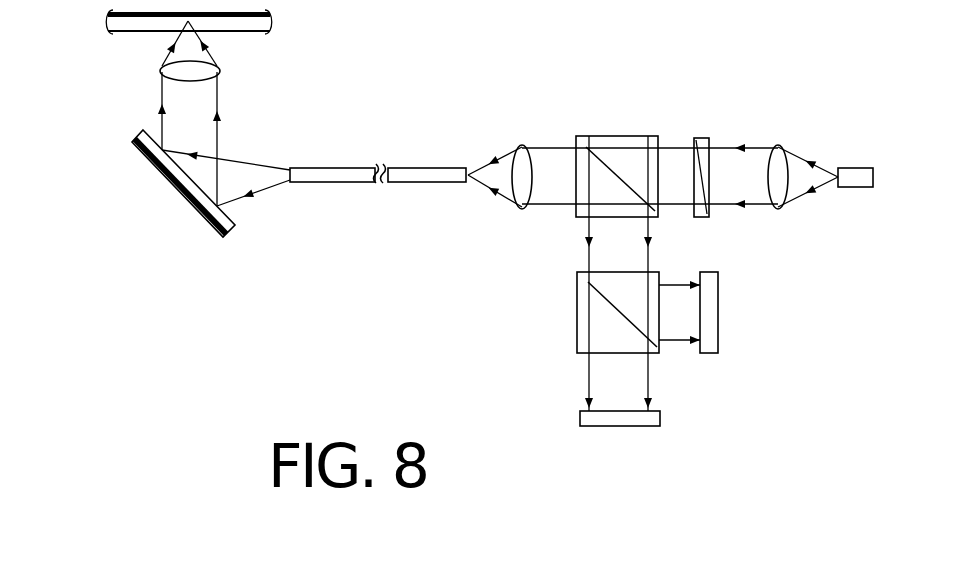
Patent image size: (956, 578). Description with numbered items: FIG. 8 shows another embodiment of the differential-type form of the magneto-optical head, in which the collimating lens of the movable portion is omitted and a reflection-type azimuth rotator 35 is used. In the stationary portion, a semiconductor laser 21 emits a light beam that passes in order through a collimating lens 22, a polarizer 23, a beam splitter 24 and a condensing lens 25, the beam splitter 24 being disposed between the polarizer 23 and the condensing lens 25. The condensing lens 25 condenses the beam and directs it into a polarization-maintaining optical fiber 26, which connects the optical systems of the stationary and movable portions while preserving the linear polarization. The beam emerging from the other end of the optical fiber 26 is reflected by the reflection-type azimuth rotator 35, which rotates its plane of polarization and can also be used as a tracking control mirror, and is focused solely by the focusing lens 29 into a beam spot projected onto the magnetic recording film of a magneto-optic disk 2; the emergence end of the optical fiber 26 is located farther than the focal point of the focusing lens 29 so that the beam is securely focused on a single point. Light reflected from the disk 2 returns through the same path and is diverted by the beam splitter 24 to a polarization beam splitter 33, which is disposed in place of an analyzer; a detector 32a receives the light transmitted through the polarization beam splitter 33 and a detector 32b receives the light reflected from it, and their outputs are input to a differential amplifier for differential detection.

The magneto-optic disk 2 is at (286, 2).
The semiconductor laser 21 is at (858, 167).
The collimating lens 22 is at (779, 146).
The polarizer 23 is at (700, 137).
The beam splitter 24 is at (626, 135).
The condensing lens 25 is at (520, 145).
The polarization-maintaining optical fiber 26 is at (431, 184).
The focusing lens 29 is at (160, 72).
The detector 32a is at (637, 427).
The detector 32b is at (720, 320).
The polarization beam splitter 33 is at (577, 318).
The reflection-type azimuth rotator 35 is at (200, 207).